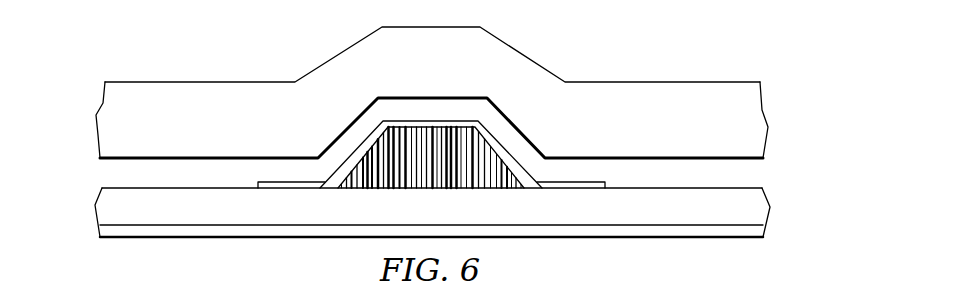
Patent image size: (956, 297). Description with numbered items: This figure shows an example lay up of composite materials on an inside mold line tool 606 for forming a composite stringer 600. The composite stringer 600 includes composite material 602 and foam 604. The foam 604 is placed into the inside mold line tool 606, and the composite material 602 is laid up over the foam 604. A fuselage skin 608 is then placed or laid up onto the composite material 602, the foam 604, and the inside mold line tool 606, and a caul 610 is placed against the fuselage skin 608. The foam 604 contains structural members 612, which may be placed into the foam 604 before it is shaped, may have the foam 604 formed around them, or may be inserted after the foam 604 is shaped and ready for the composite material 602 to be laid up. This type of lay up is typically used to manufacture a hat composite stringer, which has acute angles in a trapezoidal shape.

The composite stringer 600 is at (490, 131).
The composite material 602 is at (432, 120).
The foam 604 is at (373, 152).
The inside mold line tool 606 is at (209, 82).
The fuselage skin 608 is at (93, 210).
The caul 610 is at (763, 233).
The structural members 612 is at (422, 168).